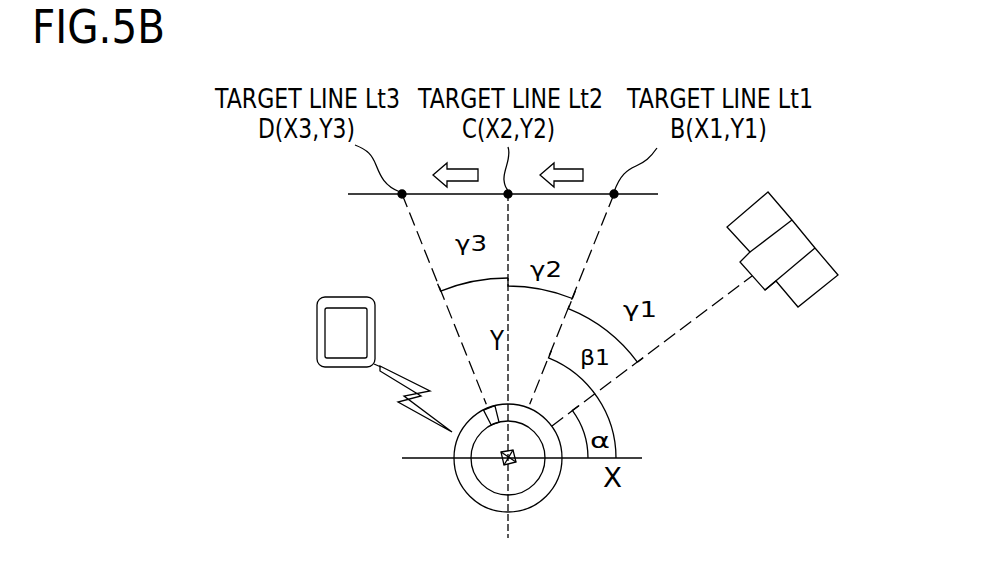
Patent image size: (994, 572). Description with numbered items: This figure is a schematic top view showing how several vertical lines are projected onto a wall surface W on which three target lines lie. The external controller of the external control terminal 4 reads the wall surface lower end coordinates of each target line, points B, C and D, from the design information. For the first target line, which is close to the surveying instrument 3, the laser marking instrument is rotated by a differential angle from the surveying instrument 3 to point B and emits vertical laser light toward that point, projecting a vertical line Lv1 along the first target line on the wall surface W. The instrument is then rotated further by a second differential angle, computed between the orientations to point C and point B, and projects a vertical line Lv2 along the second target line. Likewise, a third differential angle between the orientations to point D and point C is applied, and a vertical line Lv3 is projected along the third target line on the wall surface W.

The surveying instrument 3 is at (798, 307).
The external control terminal 4 is at (317, 332).
The wall surface W is at (365, 195).
The vertical line Lv1 is at (616, 197).
The vertical line Lv2 is at (510, 197).
The vertical line Lv3 is at (400, 198).